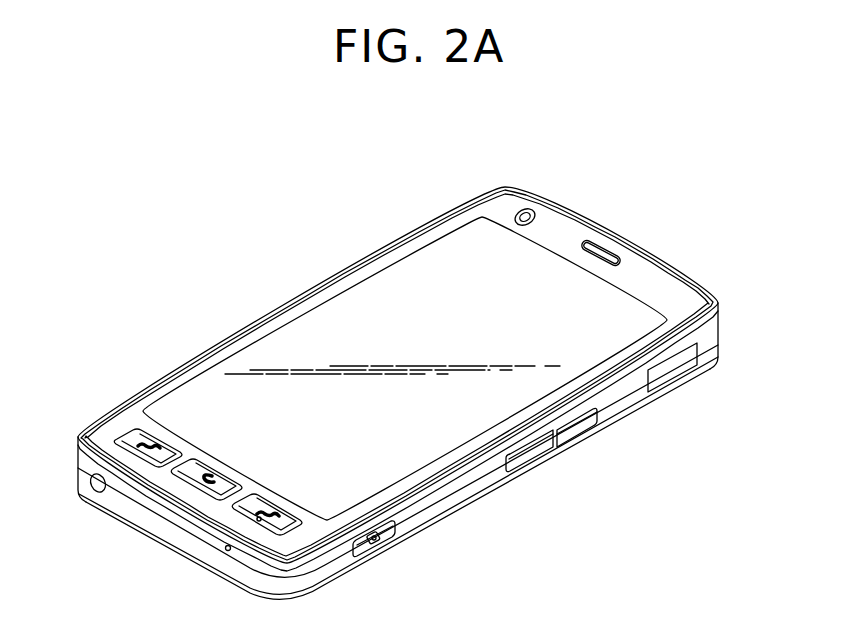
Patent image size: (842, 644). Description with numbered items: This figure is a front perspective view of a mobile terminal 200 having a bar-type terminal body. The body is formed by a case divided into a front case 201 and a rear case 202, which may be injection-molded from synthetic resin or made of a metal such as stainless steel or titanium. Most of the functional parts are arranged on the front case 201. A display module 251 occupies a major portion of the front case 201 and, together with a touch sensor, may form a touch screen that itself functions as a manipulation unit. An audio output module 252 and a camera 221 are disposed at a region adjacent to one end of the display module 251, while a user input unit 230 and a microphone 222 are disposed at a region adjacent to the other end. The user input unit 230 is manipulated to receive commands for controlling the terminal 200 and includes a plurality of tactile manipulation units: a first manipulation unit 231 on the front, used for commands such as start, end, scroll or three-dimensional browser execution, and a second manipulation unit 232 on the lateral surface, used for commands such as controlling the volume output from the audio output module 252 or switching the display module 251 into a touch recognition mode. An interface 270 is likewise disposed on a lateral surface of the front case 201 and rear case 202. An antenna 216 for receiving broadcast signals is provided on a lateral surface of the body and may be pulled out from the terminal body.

The mobile terminal 200 is at (350, 236).
The front case 201 is at (713, 330).
The rear case 202 is at (713, 350).
The antenna 216 is at (97, 486).
The camera 221 is at (533, 214).
The microphone 222 is at (226, 550).
The user input unit 230 is at (124, 422).
The first manipulation unit 231 is at (120, 438).
The second manipulation unit 232 is at (532, 455).
The display module 251 is at (335, 305).
The audio output module 252 is at (612, 258).
The interface 270 is at (672, 368).